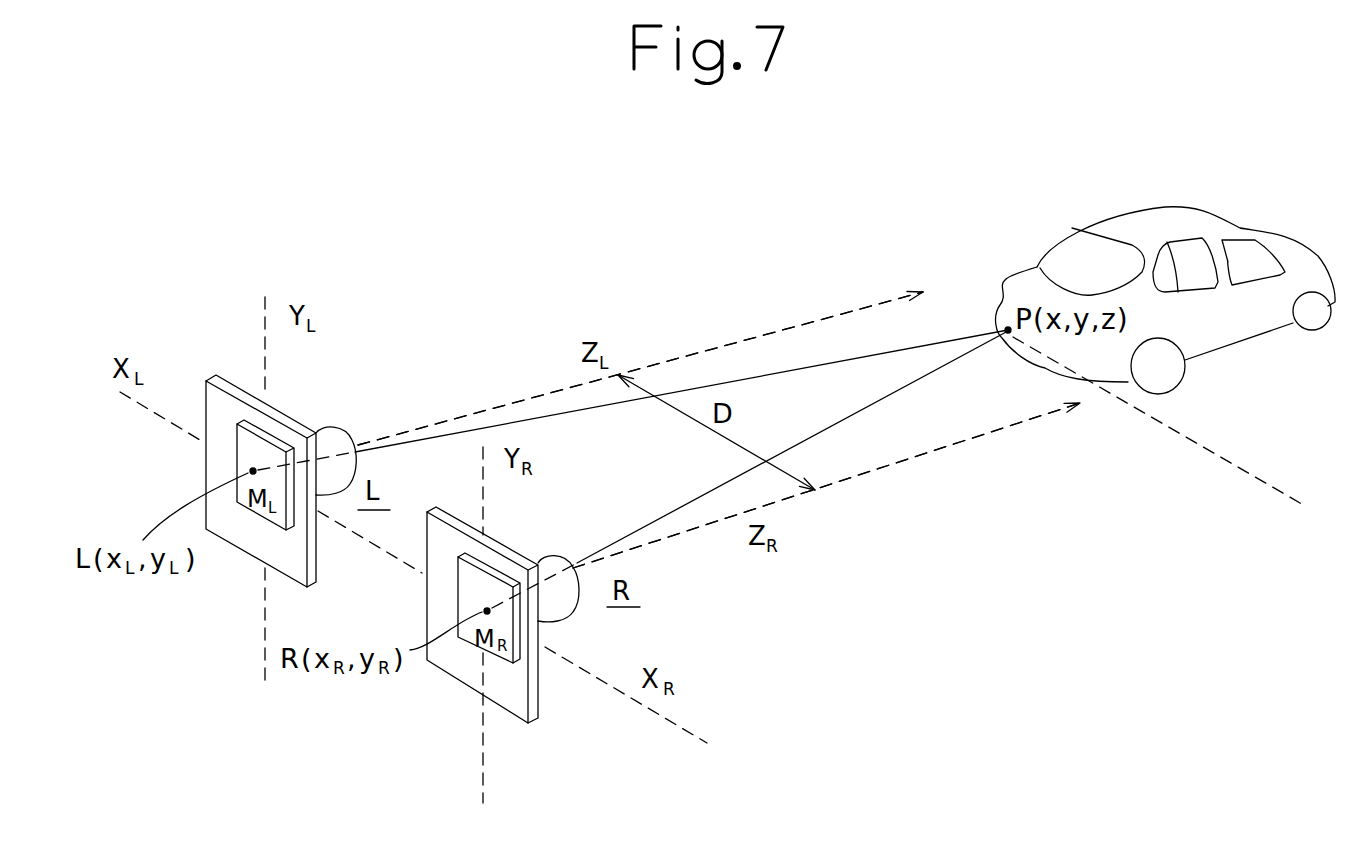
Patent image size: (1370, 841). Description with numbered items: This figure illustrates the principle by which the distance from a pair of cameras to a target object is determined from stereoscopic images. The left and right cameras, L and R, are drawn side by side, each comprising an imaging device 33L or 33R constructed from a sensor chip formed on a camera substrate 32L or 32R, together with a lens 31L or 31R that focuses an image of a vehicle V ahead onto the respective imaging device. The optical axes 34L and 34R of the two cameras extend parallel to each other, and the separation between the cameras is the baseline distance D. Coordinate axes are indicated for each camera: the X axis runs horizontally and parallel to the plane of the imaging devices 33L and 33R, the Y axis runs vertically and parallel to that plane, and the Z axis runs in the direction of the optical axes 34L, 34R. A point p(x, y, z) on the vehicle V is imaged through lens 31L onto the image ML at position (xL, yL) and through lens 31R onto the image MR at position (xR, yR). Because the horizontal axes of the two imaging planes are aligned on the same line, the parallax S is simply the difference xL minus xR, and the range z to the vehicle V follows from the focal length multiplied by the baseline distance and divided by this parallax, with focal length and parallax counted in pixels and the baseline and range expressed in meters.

The lens 31L is at (348, 427).
The lens 31R is at (547, 556).
The camera substrate 32L is at (316, 563).
The camera substrate 32R is at (539, 698).
The imaging device 33L is at (258, 513).
The imaging device 33R is at (469, 641).
The optical axis 34L is at (742, 340).
The optical axis 34R is at (922, 457).
The vehicle V is at (1167, 205).